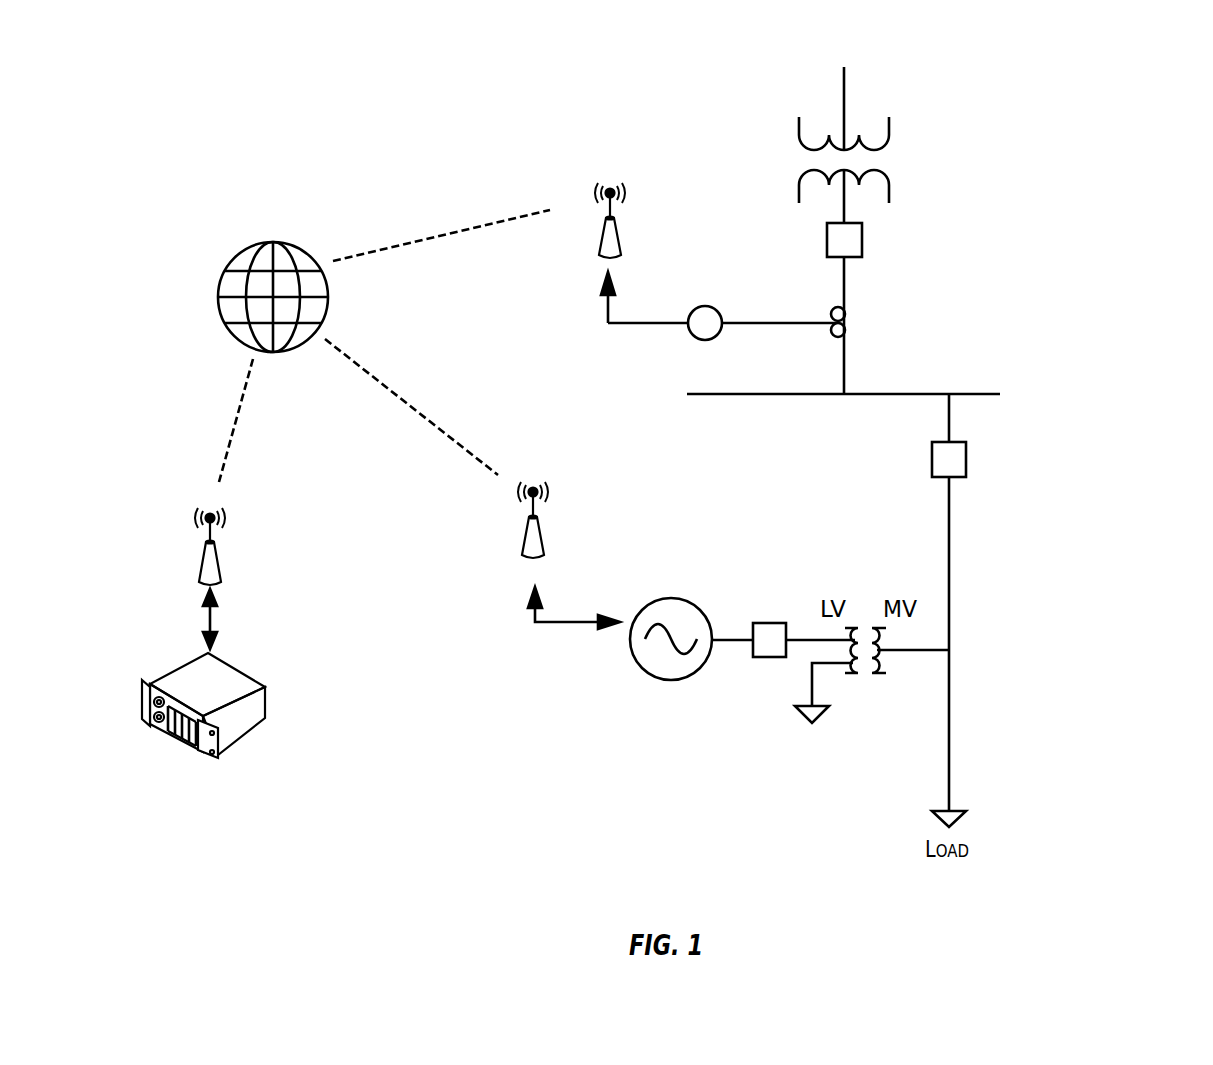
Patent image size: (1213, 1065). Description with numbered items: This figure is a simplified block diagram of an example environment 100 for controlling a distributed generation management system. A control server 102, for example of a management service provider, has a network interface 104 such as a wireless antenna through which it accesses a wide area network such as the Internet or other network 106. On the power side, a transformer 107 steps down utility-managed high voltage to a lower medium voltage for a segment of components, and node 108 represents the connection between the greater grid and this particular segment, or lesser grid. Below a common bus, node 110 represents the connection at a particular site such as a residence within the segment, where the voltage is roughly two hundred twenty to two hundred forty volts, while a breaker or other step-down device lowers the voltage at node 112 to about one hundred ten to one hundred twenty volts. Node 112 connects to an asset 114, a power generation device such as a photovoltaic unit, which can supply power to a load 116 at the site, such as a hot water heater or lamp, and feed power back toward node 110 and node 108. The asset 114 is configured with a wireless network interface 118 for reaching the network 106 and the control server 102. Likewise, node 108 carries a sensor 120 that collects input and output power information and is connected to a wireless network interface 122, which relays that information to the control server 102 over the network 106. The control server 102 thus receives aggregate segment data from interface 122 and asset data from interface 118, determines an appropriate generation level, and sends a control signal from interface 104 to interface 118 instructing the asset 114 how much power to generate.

The example environment 100 is at (1163, 112).
The control server 102 is at (262, 690).
The network interface 104 is at (220, 556).
The network 106 is at (271, 274).
The transformer 107 is at (782, 152).
The node 108 is at (862, 257).
The node 110 is at (966, 477).
The node 112 is at (753, 623).
The asset 114 is at (647, 603).
The load 116 is at (811, 710).
The network interface 118 is at (543, 531).
The sensor 120 is at (723, 300).
The network interface 122 is at (620, 232).